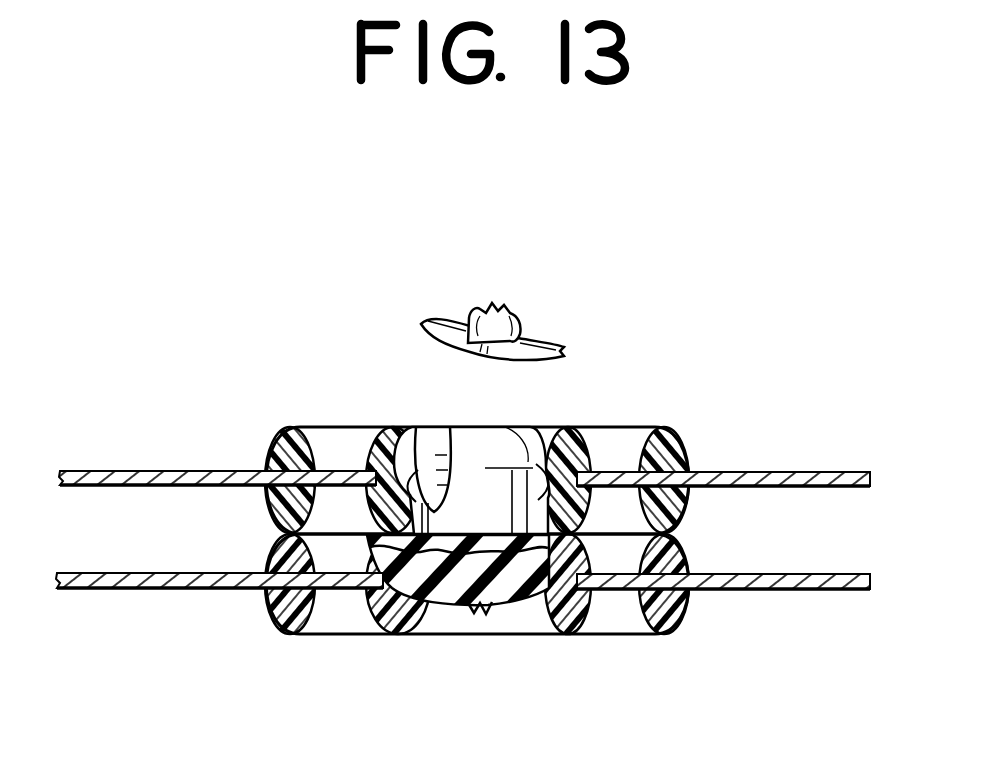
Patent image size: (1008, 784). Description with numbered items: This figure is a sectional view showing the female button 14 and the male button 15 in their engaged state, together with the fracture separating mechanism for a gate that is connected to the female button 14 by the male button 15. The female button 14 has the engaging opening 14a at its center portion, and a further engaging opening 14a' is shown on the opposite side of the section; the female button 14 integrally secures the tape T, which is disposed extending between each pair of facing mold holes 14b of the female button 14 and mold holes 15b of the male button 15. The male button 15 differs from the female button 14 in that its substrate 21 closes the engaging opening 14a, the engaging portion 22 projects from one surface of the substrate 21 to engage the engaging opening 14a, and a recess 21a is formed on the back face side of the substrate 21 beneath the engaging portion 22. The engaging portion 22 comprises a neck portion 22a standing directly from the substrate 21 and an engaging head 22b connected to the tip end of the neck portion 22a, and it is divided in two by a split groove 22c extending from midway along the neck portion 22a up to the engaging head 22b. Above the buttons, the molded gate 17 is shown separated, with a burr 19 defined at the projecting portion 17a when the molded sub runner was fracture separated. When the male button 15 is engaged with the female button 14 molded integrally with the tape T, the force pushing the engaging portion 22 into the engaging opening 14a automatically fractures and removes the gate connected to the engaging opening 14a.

The female button 14 is at (703, 448).
The engaging opening 14a is at (340, 428).
The inner flange of coil form 14a' is at (657, 431).
The mold holes 14b is at (332, 432).
The male button 15 is at (688, 622).
The mold holes 15b is at (330, 620).
The molded gate 17 is at (532, 316).
The projecting portion 17a is at (480, 312).
The burr 19 is at (500, 308).
The substrate 21 is at (541, 595).
The recess 21a is at (410, 620).
The engaging portion 22 is at (543, 428).
The neck portion 22a is at (475, 517).
The engaging head 22b is at (495, 423).
The split groove 22c is at (433, 430).
The tape T is at (840, 473).